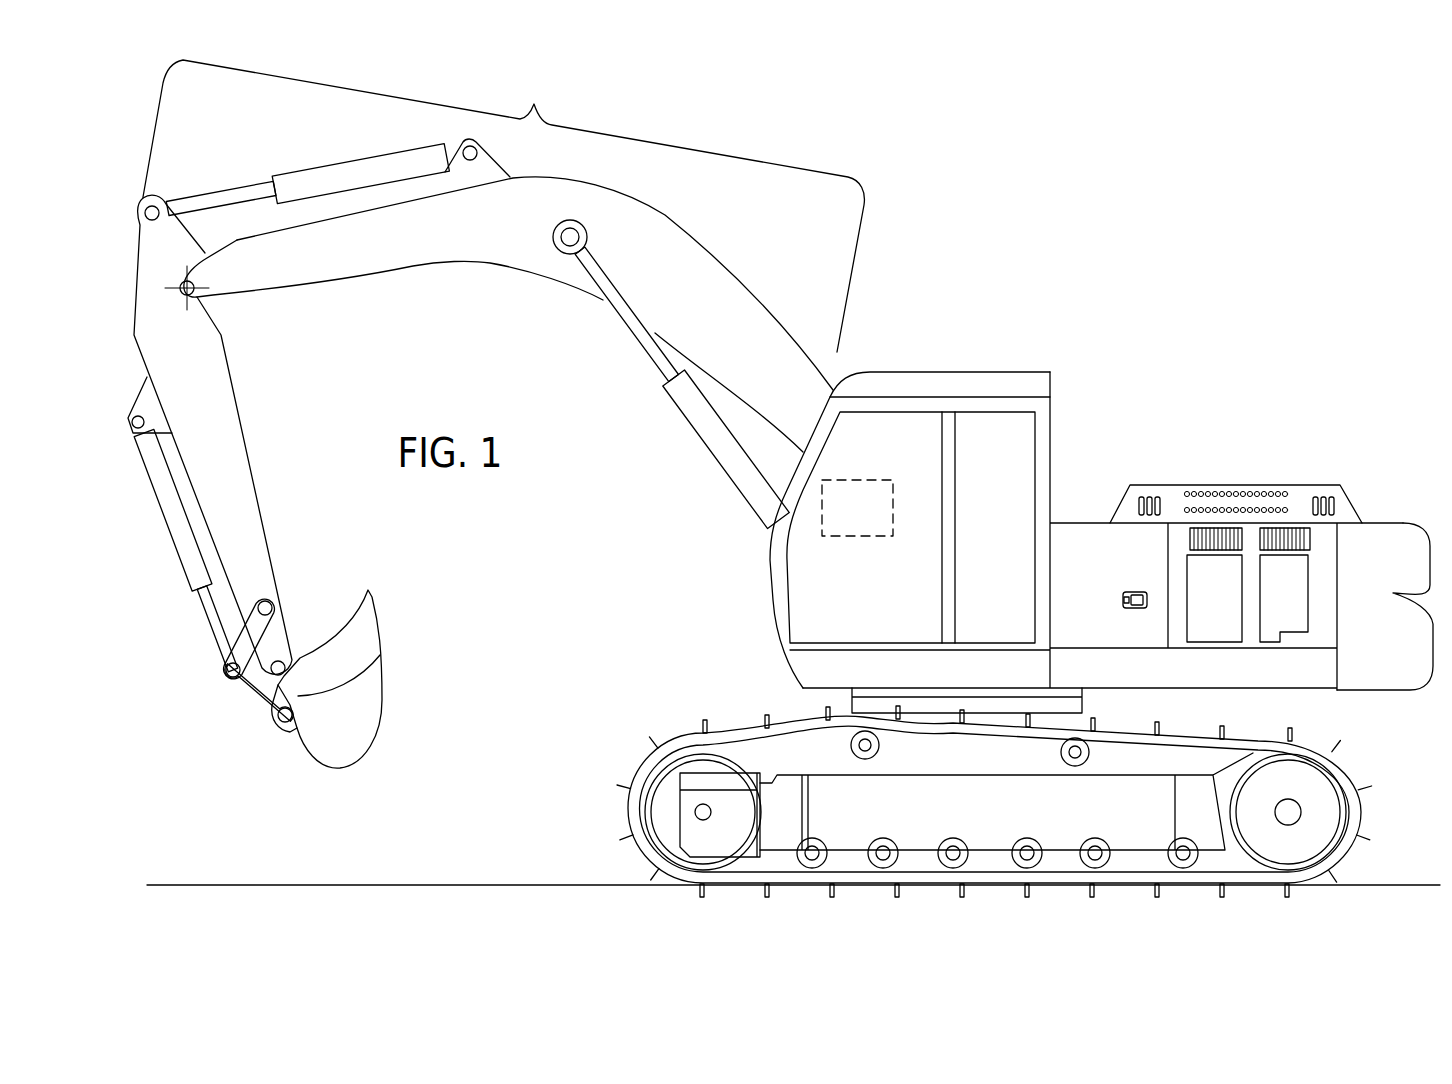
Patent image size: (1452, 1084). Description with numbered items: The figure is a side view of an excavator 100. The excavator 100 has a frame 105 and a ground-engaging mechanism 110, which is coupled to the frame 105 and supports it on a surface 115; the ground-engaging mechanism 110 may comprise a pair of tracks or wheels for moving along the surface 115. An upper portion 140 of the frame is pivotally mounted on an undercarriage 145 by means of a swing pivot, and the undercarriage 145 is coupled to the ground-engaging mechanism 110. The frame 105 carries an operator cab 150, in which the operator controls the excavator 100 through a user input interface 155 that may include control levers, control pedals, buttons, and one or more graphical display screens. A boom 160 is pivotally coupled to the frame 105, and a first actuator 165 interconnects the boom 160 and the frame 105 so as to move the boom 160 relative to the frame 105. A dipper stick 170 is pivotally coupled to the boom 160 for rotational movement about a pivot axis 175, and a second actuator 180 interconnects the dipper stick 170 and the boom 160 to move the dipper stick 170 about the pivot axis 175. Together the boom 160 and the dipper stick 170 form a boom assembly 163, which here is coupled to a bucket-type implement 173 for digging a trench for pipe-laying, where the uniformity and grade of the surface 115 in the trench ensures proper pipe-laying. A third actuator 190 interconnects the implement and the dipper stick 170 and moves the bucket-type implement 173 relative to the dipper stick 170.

The excavator 100 is at (1198, 202).
The frame 105 is at (1078, 410).
The ground-engaging mechanism 110 is at (957, 824).
The surface 115 is at (966, 939).
The upper portion 140 is at (1074, 681).
The undercarriage 145 is at (860, 707).
The operator cab 150 is at (851, 594).
The user input interface 155 is at (836, 520).
The boom 160 is at (695, 294).
The boom assembly 163 is at (481, 414).
The first actuator 165 is at (708, 421).
The dipper stick 170 is at (212, 392).
The bucket-type implement 173 is at (365, 729).
The pivot axis 175 is at (212, 312).
The second actuator 180 is at (361, 175).
The third actuator 190 is at (172, 503).